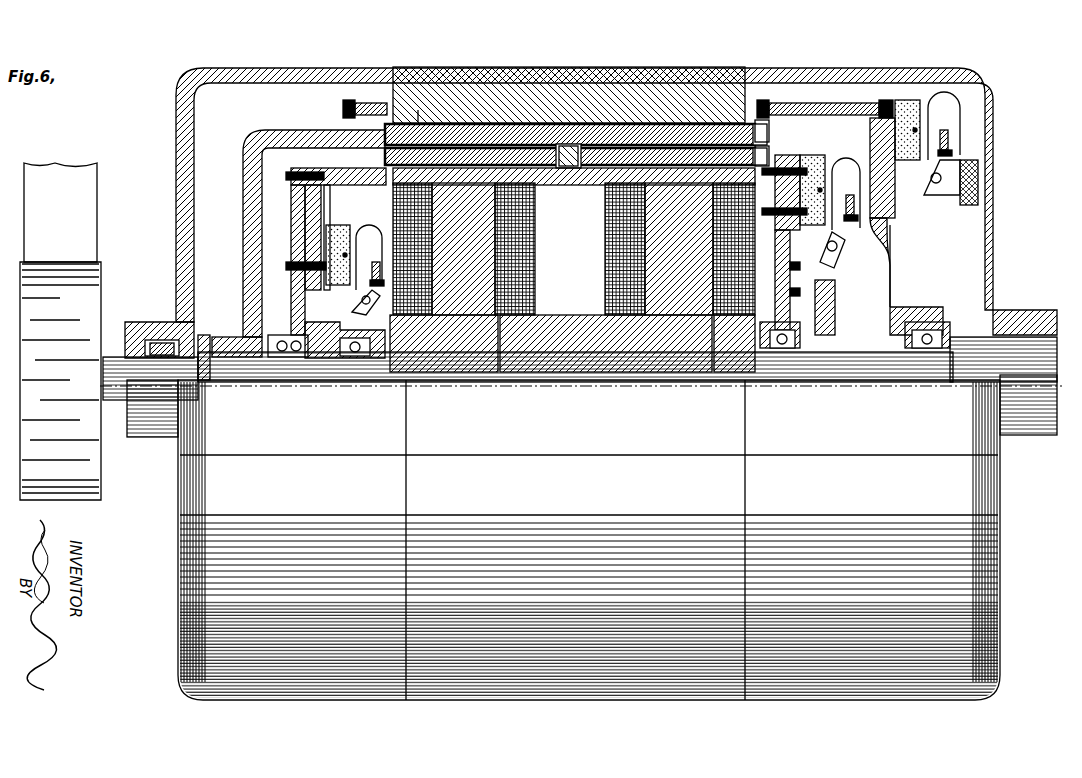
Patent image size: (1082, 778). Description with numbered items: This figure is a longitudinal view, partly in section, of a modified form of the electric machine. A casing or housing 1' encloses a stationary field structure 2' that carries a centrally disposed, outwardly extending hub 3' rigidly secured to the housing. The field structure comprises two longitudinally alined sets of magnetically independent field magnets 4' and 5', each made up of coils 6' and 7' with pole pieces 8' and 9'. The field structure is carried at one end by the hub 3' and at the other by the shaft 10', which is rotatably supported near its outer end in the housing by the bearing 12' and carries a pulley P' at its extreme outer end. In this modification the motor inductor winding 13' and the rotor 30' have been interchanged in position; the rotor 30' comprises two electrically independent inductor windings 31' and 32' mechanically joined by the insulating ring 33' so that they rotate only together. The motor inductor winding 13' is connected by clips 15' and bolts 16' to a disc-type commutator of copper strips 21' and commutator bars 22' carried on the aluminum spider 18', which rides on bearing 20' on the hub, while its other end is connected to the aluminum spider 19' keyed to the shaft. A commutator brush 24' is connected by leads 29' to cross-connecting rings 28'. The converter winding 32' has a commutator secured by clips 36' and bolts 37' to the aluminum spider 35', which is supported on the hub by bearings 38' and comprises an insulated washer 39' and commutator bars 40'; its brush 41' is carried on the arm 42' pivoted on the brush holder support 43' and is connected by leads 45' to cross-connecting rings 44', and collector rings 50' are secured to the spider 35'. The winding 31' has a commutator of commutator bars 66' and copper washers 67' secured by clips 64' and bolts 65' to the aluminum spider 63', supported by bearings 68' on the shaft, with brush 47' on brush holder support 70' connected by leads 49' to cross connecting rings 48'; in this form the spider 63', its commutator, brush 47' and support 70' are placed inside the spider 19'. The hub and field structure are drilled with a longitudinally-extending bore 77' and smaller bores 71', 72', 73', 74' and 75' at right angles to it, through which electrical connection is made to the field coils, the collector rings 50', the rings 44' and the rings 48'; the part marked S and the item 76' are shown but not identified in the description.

The casing or housing 1' is at (602, 540).
The field structure 2' is at (572, 367).
The hub 3' is at (581, 386).
The field magnet 4' is at (574, 241).
The field magnet 5' is at (586, 293).
The coils 6' is at (546, 277).
The coils 7' is at (574, 249).
The pole pieces 8' is at (553, 84).
The pole pieces 9' is at (659, 101).
The shaft 10' is at (279, 374).
The bearing 12' is at (159, 321).
The motor inductor winding 13' is at (569, 84).
The clips 15' is at (583, 74).
The bolts 16' is at (595, 78).
The aluminum spider 18' is at (906, 276).
The aluminum spider 19' is at (299, 233).
The bearing 20' is at (927, 369).
The copper strips 21' is at (873, 128).
The commutator bars 22' is at (908, 99).
The commutator brush 24' is at (944, 99).
The cross-connecting rings 28' is at (975, 146).
The leads 29' is at (978, 100).
The rotor 30' is at (590, 94).
The inductor winding 31' is at (463, 80).
The inductor winding 32' is at (712, 99).
The insulating ring 33' is at (576, 162).
The aluminum spider 35' is at (771, 280).
The clips 36' is at (773, 143).
The bolts 37' is at (791, 188).
The bearings 38' is at (780, 369).
The insulated washer 39' is at (755, 193).
The commutator bars 40' is at (817, 180).
The brush 41' is at (846, 178).
The arm 42' is at (817, 250).
The brush holder support 43' is at (616, 201).
The cross-connecting rings 44' is at (883, 208).
The leads 45' is at (883, 185).
The brush 47' is at (333, 266).
The cross connecting rings 48' is at (371, 261).
The leads 49' is at (364, 245).
The collector rings 50' is at (811, 279).
The aluminum spider 63' is at (280, 301).
The clips 64' is at (338, 164).
The bolts 65' is at (295, 191).
The commutator bars 66' is at (341, 237).
The copper washers 67' is at (291, 259).
The bearings 68' is at (221, 386).
The brush holder support 70' is at (361, 308).
The bore 71' is at (473, 392).
The bore 72' is at (692, 394).
The bore 73' is at (813, 397).
The bore 74' is at (880, 397).
The bore 75' is at (345, 382).
The stator end 76' is at (428, 73).
The longitudinally-extending bore 77' is at (523, 412).
The pulley P' is at (60, 331).
The support S is at (858, 290).